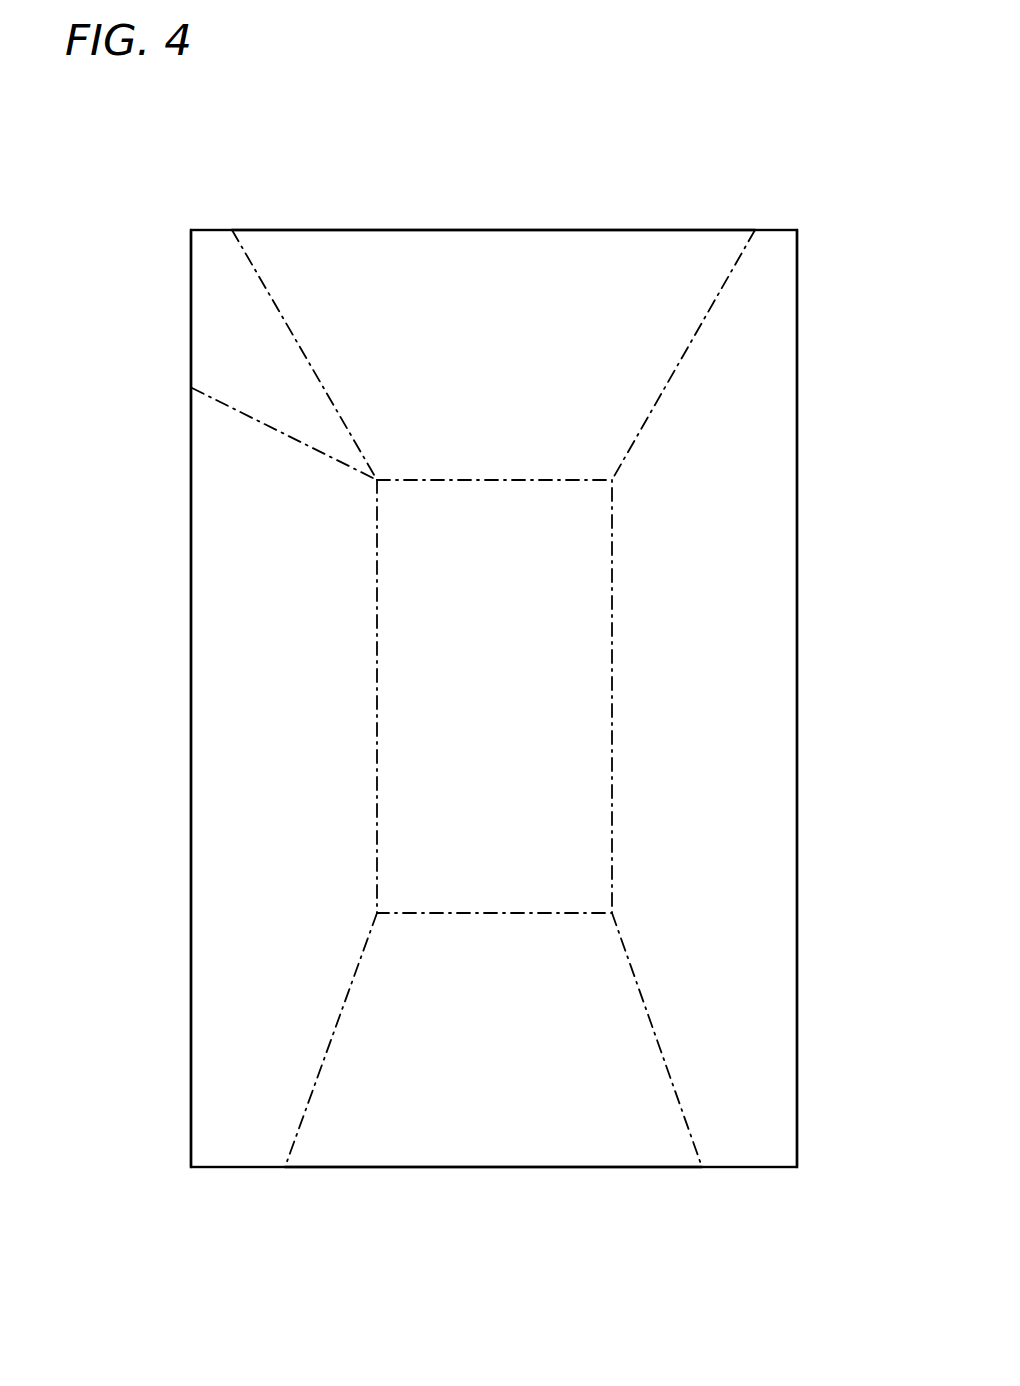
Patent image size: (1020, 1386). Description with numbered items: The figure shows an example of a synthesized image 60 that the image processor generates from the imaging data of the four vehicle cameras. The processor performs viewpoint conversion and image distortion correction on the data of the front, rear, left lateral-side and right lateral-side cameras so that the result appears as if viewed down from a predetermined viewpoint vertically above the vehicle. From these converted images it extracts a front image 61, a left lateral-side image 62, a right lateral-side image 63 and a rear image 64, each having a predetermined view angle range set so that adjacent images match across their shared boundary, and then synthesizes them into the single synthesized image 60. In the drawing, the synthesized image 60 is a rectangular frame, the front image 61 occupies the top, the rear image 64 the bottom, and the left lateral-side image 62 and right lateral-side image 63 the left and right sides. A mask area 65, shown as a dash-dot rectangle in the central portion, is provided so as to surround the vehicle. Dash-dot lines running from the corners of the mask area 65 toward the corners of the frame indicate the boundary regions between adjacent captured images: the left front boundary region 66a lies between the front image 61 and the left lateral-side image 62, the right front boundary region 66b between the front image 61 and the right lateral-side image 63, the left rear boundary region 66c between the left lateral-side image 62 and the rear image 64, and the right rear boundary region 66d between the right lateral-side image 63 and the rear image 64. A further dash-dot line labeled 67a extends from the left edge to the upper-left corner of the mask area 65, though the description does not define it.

The synthesized image 60 is at (793, 230).
The front image 61 is at (520, 297).
The left lateral-side image 62 is at (250, 528).
The right lateral-side image 63 is at (728, 480).
The rear image 64 is at (493, 1132).
The mask area 65 is at (612, 567).
The left front boundary region 66a is at (240, 272).
The right front boundary region 66b is at (713, 300).
The left rear boundary region 66c is at (307, 1100).
The right rear boundary region 66d is at (678, 1102).
The fold line 67a is at (217, 405).